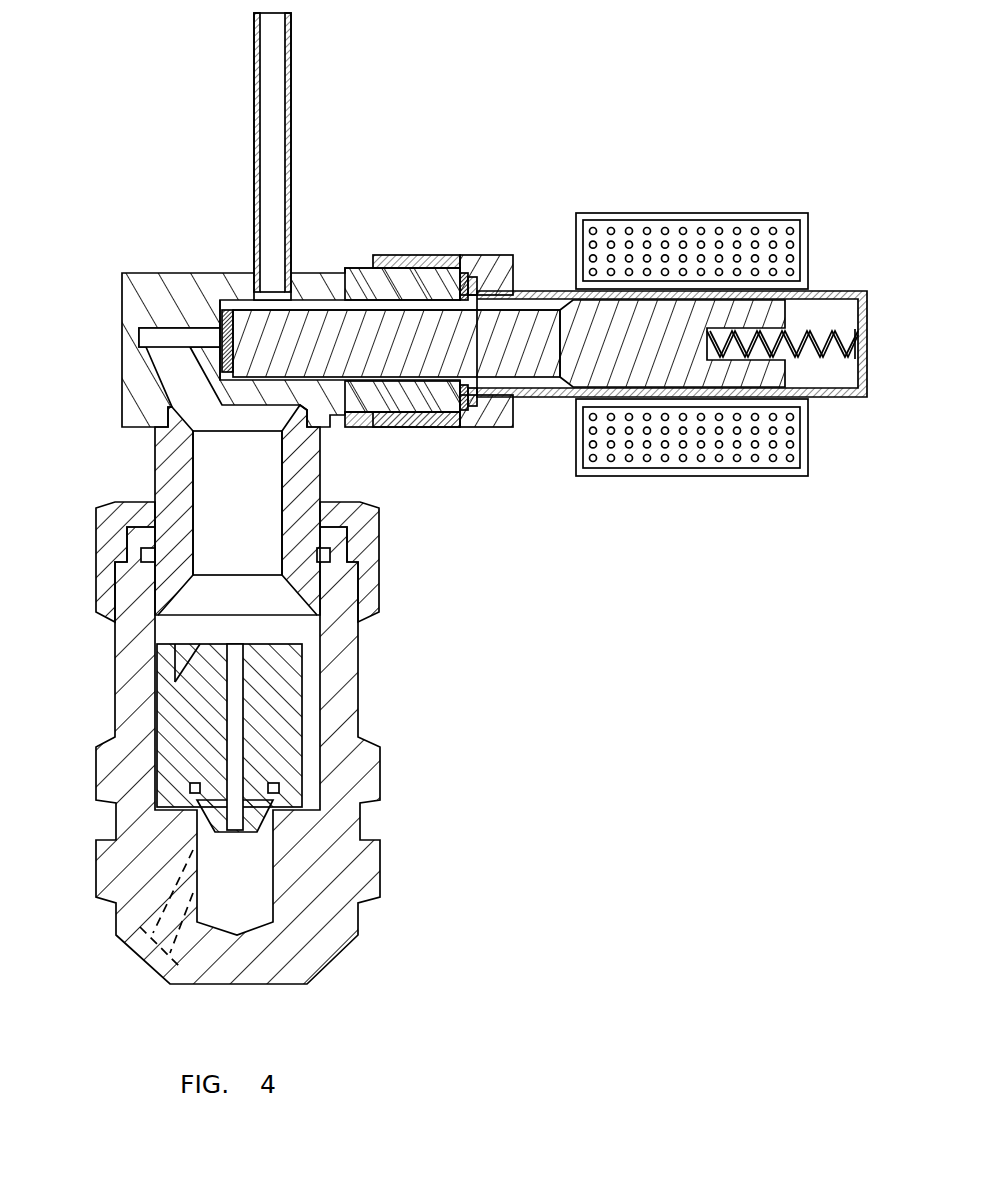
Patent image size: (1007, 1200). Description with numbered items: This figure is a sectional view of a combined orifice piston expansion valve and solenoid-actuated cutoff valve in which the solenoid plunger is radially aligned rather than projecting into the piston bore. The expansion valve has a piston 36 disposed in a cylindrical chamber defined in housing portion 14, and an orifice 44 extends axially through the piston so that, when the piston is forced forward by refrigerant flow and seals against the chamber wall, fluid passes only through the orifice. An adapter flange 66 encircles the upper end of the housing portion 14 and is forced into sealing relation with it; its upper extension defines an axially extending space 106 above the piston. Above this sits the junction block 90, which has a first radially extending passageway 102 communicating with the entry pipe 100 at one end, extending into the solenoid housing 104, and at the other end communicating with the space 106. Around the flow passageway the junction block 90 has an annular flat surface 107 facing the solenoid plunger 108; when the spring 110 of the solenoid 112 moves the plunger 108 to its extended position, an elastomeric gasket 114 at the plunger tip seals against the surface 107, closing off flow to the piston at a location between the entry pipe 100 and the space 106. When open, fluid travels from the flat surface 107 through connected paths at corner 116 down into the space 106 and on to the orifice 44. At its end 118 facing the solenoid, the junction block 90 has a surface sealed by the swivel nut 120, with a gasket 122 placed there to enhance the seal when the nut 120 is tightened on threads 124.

The housing portion 14 is at (380, 763).
The piston 36 is at (173, 707).
The orifice 44 is at (233, 723).
The adapter flange 66 is at (173, 538).
The junction block 90 is at (140, 272).
The entry pipe 100 is at (292, 65).
The first radially extending passageway 102 is at (347, 300).
The solenoid housing 104 is at (512, 378).
The axially extending space 106 is at (220, 475).
The annular flat surface 107 is at (222, 315).
The solenoid plunger 108 is at (650, 370).
The spring 110 is at (818, 328).
The solenoid 112 is at (715, 168).
The elastomeric gasket 114 is at (215, 313).
The corner 116 is at (155, 340).
The end 118 is at (447, 286).
The swivel nut 120 is at (484, 427).
The gasket 122 is at (463, 273).
The threads 124 is at (540, 308).